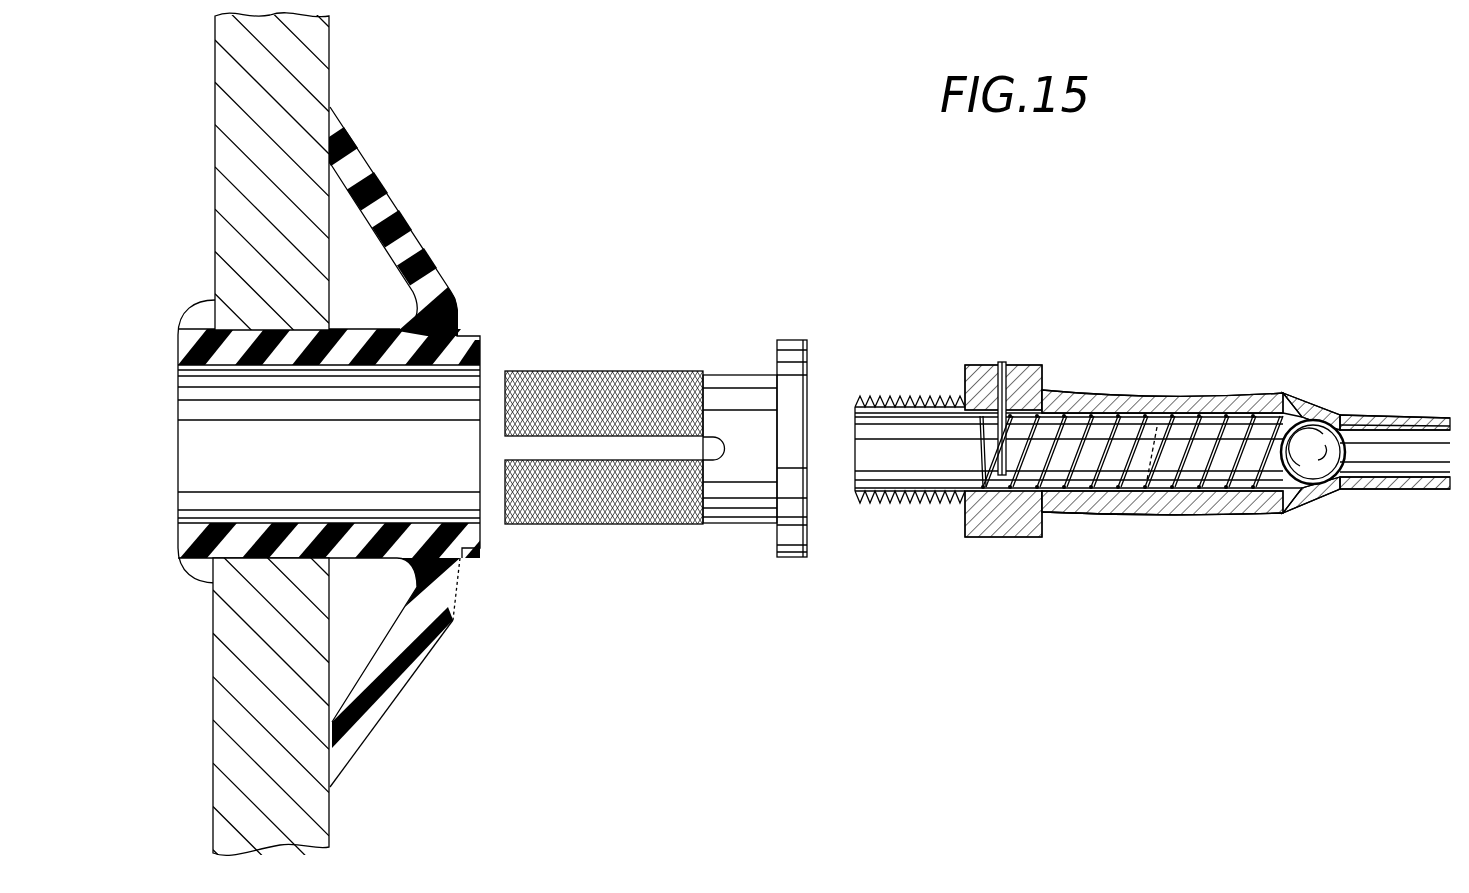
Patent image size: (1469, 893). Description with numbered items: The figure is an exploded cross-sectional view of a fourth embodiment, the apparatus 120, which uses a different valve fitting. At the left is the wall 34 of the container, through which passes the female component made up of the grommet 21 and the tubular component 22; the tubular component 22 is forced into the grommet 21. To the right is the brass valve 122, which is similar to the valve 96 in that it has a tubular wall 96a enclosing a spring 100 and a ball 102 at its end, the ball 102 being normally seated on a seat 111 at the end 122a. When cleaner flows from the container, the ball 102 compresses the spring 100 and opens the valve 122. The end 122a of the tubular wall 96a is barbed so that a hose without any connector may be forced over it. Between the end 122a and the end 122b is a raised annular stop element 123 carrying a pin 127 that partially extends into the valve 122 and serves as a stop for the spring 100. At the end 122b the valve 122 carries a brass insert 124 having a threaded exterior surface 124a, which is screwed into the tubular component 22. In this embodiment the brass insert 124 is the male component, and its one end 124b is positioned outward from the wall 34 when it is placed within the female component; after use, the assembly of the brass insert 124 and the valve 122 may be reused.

The grommet 21 is at (440, 590).
The tubular component 22 is at (752, 522).
The wall 34 is at (326, 44).
The valve 96 is at (1191, 409).
The tubular wall 96a is at (1252, 400).
The spring 100 is at (1258, 502).
The ball 102 is at (1305, 437).
The seat 111 is at (1308, 490).
The apparatus 120 is at (1135, 437).
The brass valve 122 is at (1164, 520).
The one end 122a is at (1352, 492).
The end 122b is at (920, 482).
The raised annular stop element 123 is at (1040, 366).
The brass insert 124 is at (1051, 426).
The threaded exterior surface 124a is at (937, 395).
The one end 124b is at (918, 487).
The pin 127 is at (1003, 358).